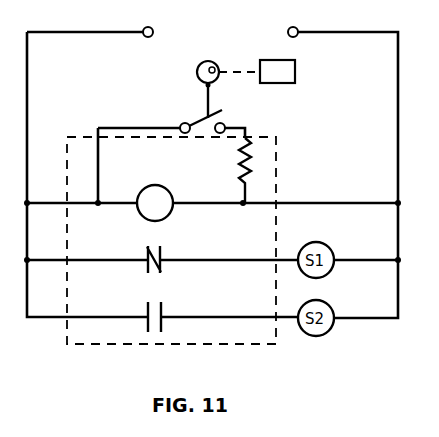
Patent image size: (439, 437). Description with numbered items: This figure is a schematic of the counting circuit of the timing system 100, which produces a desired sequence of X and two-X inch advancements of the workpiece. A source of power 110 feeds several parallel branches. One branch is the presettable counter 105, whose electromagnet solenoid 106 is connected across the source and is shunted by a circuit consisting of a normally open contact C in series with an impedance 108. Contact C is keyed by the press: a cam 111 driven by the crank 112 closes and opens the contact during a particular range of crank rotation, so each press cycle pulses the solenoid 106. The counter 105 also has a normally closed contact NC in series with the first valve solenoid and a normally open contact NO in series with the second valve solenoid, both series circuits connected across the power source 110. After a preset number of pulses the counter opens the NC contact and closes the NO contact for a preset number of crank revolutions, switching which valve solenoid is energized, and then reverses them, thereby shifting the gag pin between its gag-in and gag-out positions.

The timing system 100 is at (212, 350).
The presettable counter 105 is at (155, 346).
The solenoid of the electromagnet 106 is at (155, 203).
The impedance 108 is at (240, 152).
The source of power 110 is at (257, 35).
The cam 111 is at (197, 70).
The crank 112 is at (295, 70).